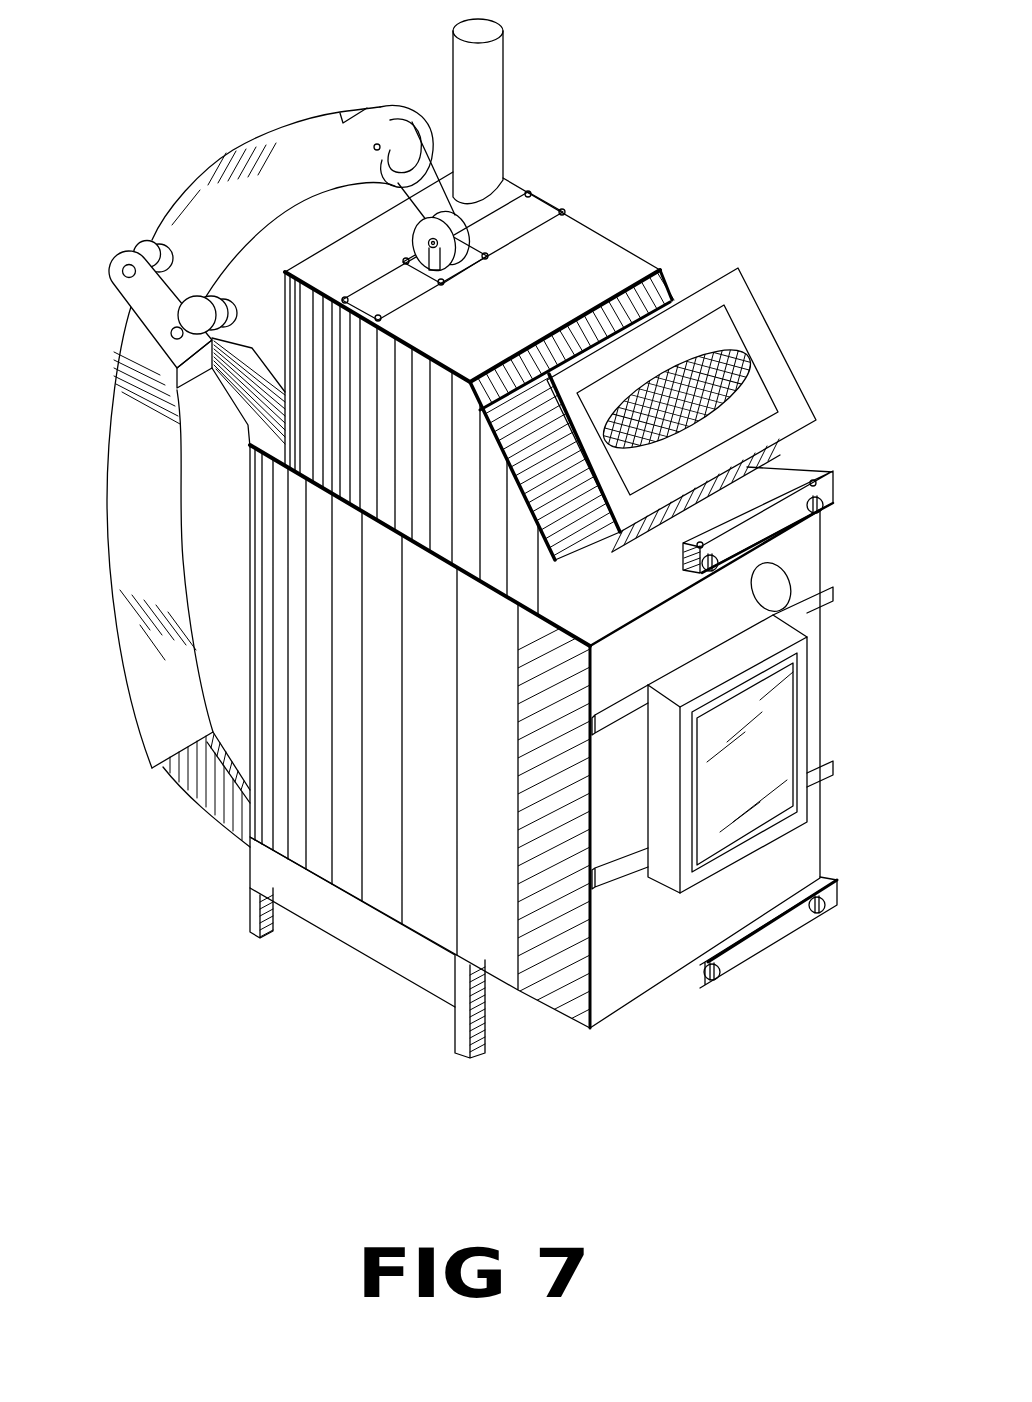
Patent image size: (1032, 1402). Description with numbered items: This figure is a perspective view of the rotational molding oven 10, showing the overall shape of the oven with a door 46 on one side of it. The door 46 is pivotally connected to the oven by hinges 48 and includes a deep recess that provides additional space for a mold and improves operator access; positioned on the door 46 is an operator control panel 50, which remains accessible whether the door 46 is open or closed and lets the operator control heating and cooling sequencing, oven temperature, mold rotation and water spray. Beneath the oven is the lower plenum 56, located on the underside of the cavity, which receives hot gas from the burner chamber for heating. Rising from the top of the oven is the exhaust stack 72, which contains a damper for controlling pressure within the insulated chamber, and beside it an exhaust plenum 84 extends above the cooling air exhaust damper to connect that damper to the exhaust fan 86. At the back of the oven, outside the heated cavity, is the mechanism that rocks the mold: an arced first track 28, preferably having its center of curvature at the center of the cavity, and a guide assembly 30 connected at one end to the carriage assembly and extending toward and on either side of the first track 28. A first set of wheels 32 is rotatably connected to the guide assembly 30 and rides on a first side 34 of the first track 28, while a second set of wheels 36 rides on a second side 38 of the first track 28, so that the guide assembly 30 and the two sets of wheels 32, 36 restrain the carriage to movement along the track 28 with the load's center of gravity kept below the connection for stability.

The rotational molding oven 10 is at (734, 234).
The first track 28 is at (148, 692).
The guide assembly 30 is at (145, 293).
The first set of wheels 32 is at (215, 305).
The first side of the first track 34 is at (240, 260).
The second set of wheels 36 is at (158, 247).
The second side of the first track 38 is at (186, 203).
The door 46 is at (805, 633).
The hinges 48 is at (800, 472).
The operator control panel 50 is at (778, 718).
The lower plenum 56 is at (378, 938).
The exhaust stack 72 is at (485, 131).
The exhaust plenum 84 is at (790, 402).
The exhaust fan 86 is at (724, 362).